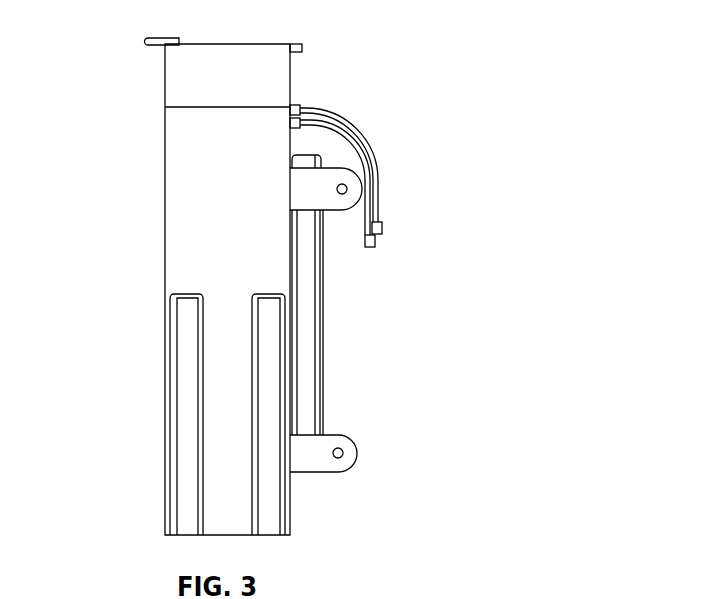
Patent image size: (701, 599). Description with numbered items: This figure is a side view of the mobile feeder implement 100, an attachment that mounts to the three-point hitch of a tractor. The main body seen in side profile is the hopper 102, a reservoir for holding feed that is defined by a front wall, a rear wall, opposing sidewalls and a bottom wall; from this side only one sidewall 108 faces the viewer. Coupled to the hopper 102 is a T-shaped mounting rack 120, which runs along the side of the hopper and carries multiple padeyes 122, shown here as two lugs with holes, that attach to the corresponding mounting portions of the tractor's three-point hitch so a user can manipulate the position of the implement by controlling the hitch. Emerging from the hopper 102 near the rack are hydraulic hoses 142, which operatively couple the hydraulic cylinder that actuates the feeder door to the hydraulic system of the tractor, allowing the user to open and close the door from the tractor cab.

The mobile feeder implement 100 is at (522, 42).
The hopper 102 is at (165, 261).
The sidewall 108 is at (246, 160).
The mounting rack 120 is at (324, 359).
The padeyes 122 is at (330, 211).
The hydraulic hoses 142 is at (323, 108).